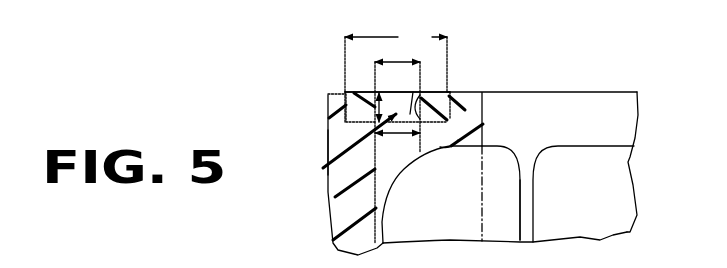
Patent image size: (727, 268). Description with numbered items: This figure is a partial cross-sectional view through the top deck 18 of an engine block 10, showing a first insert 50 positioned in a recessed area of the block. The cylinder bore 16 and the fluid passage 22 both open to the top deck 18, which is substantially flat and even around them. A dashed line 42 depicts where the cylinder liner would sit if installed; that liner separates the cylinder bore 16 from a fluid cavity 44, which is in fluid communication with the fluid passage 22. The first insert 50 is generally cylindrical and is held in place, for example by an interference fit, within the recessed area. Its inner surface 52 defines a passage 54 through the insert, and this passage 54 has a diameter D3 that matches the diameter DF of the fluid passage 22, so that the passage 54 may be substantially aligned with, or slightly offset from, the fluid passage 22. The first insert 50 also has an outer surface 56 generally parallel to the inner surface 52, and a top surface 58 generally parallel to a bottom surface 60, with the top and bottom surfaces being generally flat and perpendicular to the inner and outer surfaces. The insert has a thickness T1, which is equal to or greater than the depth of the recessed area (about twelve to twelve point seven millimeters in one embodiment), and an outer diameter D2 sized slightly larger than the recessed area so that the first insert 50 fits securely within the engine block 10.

The engine block 10 is at (324, 140).
The cylinder bore 16 is at (578, 133).
The top deck 18 is at (482, 93).
The fluid passage 22 is at (401, 165).
The dashed line 42 is at (496, 259).
The fluid cavity 44 is at (444, 207).
The first insert 50 is at (449, 138).
The inner surface 52 is at (420, 155).
The passage 54 is at (335, 163).
The outer surface 56 is at (327, 101).
The top surface 58 is at (345, 84).
The bottom surface 60 is at (365, 125).
The outer diameter of the first insert D2 is at (396, 59).
The diameter of the passage D3 is at (396, 61).
The thickness of the first insert T1 is at (384, 75).
The diameter of the fluid passage DF is at (458, 140).